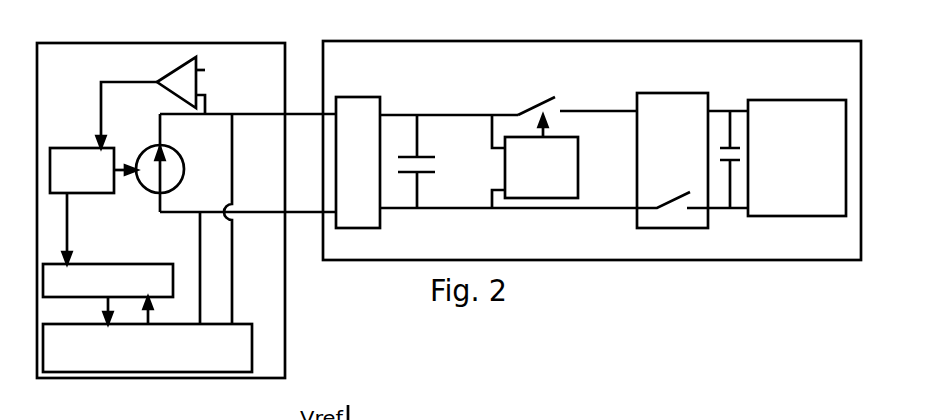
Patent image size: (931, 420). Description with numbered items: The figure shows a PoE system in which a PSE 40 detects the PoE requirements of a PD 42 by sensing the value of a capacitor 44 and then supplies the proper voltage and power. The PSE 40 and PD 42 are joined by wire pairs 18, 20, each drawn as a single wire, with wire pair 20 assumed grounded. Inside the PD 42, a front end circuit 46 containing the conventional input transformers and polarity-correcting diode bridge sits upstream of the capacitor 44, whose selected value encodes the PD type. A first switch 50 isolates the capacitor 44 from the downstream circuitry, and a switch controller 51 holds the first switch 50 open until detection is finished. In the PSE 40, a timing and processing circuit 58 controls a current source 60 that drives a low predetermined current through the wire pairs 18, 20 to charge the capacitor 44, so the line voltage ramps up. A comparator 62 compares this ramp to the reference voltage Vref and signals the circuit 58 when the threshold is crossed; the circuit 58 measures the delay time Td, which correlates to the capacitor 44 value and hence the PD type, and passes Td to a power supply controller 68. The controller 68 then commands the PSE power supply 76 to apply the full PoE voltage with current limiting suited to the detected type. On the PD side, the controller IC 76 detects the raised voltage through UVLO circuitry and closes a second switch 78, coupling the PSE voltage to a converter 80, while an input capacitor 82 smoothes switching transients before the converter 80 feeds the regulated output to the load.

The wire pair 18 is at (301, 115).
The wire pair 20 is at (302, 212).
The PSE 40 is at (285, 305).
The PD 42 is at (586, 251).
The capacitor 44 is at (437, 167).
The front end circuit 46 is at (367, 98).
The first switch 50 is at (525, 102).
The switch controller 51 is at (553, 178).
The PSE timing and processing circuit 58 is at (89, 180).
The current source 60 is at (183, 162).
The comparator 62 is at (172, 70).
The power supply controller 68 is at (107, 263).
The PSE power supply / PD controller IC 76 is at (147, 373).
The second switch 78 is at (677, 207).
The converter 80 is at (820, 100).
The input capacitor 82 is at (741, 140).